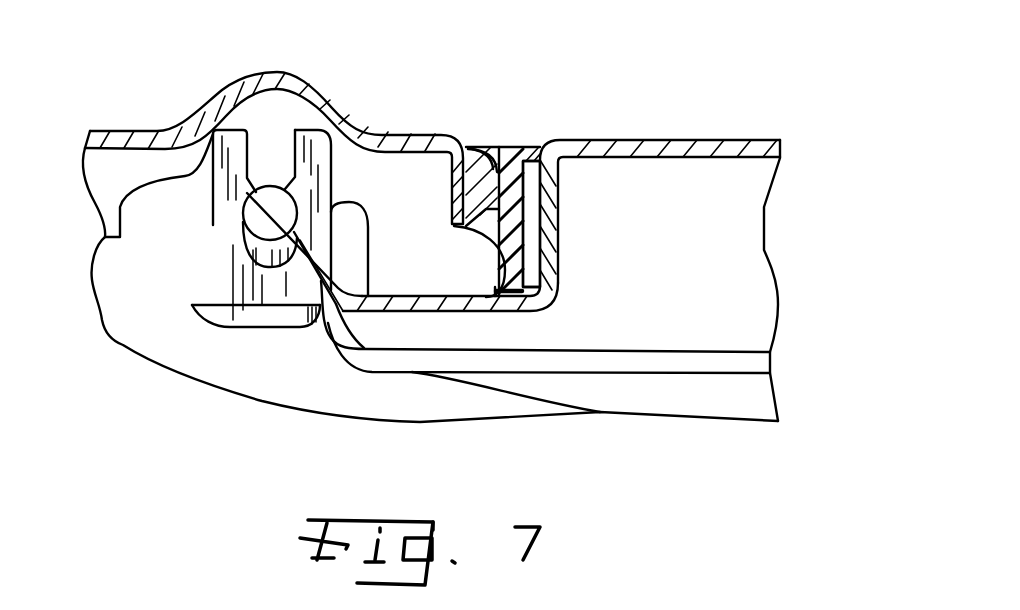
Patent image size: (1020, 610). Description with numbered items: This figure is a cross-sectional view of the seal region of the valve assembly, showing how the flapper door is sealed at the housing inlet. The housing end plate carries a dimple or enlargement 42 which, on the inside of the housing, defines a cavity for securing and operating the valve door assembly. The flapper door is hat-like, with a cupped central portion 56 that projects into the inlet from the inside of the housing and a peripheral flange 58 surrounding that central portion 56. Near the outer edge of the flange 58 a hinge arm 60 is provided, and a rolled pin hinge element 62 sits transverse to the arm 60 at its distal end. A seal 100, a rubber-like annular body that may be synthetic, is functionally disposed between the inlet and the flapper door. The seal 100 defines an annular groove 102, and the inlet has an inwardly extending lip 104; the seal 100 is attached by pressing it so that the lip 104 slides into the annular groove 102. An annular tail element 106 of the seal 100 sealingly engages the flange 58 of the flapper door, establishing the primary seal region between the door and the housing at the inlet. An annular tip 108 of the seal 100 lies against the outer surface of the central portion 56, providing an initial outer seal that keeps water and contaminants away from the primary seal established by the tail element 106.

The enlargement 42 is at (252, 73).
The cupped central portion 56 is at (690, 147).
The peripheral flange 58 is at (497, 312).
The hinge arm 60 is at (316, 257).
The rolled pin hinge element 62 is at (257, 214).
The seal 100 is at (545, 214).
The annular groove 102 is at (477, 256).
The inwardly extending lip 104 is at (500, 147).
The annular tail element 106 is at (541, 281).
The annular tip 108 is at (537, 158).